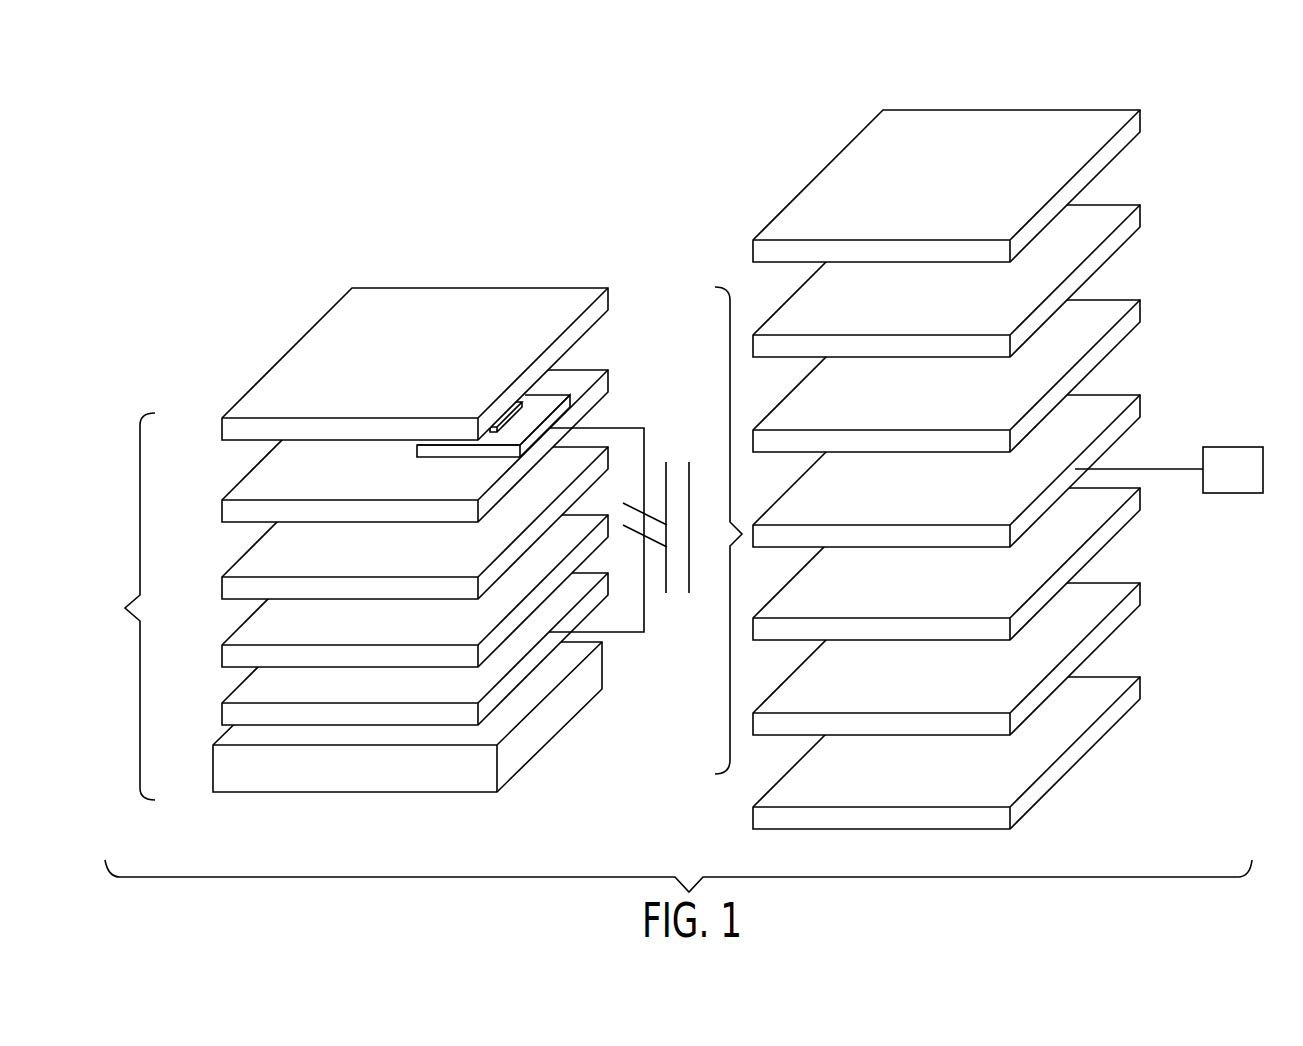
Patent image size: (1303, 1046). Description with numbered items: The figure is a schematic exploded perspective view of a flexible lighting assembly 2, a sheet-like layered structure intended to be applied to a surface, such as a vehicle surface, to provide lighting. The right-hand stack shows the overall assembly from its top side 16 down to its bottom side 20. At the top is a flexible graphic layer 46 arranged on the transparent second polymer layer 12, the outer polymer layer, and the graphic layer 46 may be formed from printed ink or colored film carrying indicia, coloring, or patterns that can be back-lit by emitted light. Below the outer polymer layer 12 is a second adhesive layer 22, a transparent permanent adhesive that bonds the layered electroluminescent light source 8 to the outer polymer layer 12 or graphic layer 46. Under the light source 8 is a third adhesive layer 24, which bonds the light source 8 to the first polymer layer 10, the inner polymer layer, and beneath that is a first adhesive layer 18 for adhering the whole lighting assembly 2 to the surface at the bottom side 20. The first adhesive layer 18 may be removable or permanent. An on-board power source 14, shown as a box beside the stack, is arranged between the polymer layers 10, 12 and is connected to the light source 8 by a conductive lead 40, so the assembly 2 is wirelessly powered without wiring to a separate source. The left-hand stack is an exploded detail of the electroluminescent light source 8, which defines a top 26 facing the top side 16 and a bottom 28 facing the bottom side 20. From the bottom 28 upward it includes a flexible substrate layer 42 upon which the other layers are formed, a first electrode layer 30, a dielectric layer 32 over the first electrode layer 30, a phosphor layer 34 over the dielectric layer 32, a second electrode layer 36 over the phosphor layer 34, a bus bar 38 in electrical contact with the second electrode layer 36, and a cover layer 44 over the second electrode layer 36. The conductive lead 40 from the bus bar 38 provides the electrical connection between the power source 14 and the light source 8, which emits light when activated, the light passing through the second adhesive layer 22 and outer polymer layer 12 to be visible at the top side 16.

The flexible lighting assembly 2 is at (655, 463).
The electroluminescent light source 8 is at (1143, 403).
The first polymer layer 10 is at (1143, 592).
The second polymer layer 12 is at (1143, 212).
The on-board power source 14 is at (1230, 493).
The top side 16 is at (1057, 135).
The first adhesive layer 18 is at (1143, 685).
The bottom side 20 is at (950, 831).
The second adhesive layer 22 is at (1143, 306).
The third adhesive layer 24 is at (1143, 493).
The top 26 is at (335, 353).
The bottom 28 is at (295, 794).
The first electrode layer 30 is at (228, 722).
The dielectric layer 32 is at (240, 661).
The phosphor layer 34 is at (245, 593).
The second electrode layer 36 is at (245, 516).
The bus bar 38 is at (552, 393).
The conductive lead 40 is at (678, 536).
The flexible substrate layer 42 is at (216, 746).
The cover layer 44 is at (250, 434).
The flexible graphic layer 46 is at (1143, 118).